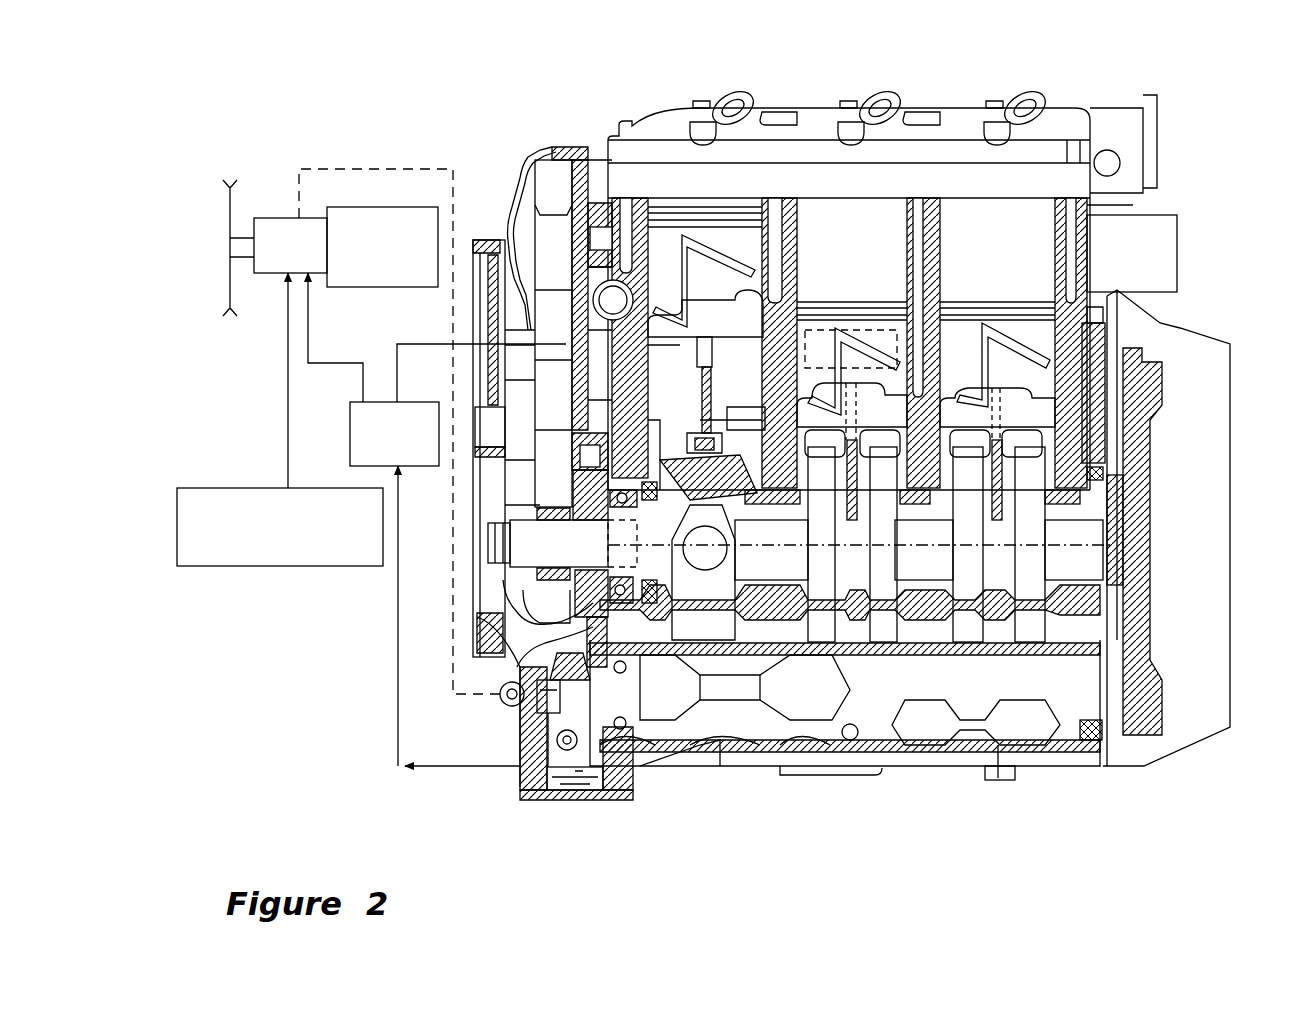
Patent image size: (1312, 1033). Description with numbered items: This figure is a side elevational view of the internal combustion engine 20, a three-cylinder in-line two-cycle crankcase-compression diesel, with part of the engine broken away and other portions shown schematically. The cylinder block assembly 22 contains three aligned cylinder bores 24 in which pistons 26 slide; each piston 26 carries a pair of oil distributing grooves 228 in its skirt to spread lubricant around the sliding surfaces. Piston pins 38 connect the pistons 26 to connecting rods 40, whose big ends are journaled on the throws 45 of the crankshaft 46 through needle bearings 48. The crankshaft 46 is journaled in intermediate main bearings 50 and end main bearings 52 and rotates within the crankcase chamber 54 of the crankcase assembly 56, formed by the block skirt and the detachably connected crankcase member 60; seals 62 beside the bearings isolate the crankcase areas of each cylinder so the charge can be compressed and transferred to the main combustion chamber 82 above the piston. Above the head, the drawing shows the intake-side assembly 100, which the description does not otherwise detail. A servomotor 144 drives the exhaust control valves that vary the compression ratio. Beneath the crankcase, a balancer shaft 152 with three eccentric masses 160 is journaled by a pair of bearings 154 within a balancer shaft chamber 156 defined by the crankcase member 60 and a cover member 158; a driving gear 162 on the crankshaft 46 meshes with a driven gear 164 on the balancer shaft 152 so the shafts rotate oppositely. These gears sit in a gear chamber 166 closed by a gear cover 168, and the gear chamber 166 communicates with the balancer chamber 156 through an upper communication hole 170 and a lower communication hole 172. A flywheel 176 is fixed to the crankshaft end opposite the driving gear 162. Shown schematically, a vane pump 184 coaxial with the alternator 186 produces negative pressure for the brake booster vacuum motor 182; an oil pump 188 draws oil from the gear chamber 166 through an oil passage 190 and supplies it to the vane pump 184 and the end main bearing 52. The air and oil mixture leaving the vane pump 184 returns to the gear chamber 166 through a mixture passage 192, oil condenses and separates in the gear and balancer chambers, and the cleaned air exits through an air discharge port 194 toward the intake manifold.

The internal combustion engine 20 is at (1225, 132).
The cylinder block assembly 22 is at (1125, 410).
The cylinder bores 24 is at (1050, 248).
The pistons 26 is at (753, 200).
The piston pins 38 is at (852, 328).
The connecting rods 40 is at (705, 430).
The throws 45 is at (725, 482).
The crankshaft 46 is at (1100, 530).
The needle bearings 48 is at (703, 572).
The intermediate main bearings 50 is at (800, 660).
The end main bearings 52 is at (630, 570).
The crankcase chamber 54 is at (1000, 642).
The crankcase assembly 56 is at (1100, 637).
The crankcase member 60 is at (978, 650).
The seals 62 is at (925, 620).
The main combustion chamber 82 is at (877, 205).
The intake manifold 100 is at (963, 103).
The servomotor 144 is at (1180, 253).
The balancer shaft 152 is at (765, 728).
The bearings 154 is at (690, 766).
The balancer shaft chamber 156 is at (922, 766).
The cover member 158 is at (1028, 766).
The eccentric masses 160 is at (958, 766).
The driving gear 162 is at (620, 470).
The driven gear 164 is at (595, 775).
The gear chamber 166 is at (555, 800).
The gear cover 168 is at (520, 793).
The upper communication hole 170 is at (672, 575).
The lower communication hole 172 is at (642, 748).
The flywheel 176 is at (1154, 690).
The brake booster vacuum motor 182 is at (248, 488).
The vane pump 184 is at (278, 218).
The alternator 186 is at (385, 207).
The oil pump 188 is at (375, 402).
The oil passage 190 is at (398, 648).
The mixture passage 192 is at (453, 505).
The air discharge port 194 is at (850, 766).
The oil distributing grooves 228 is at (815, 345).